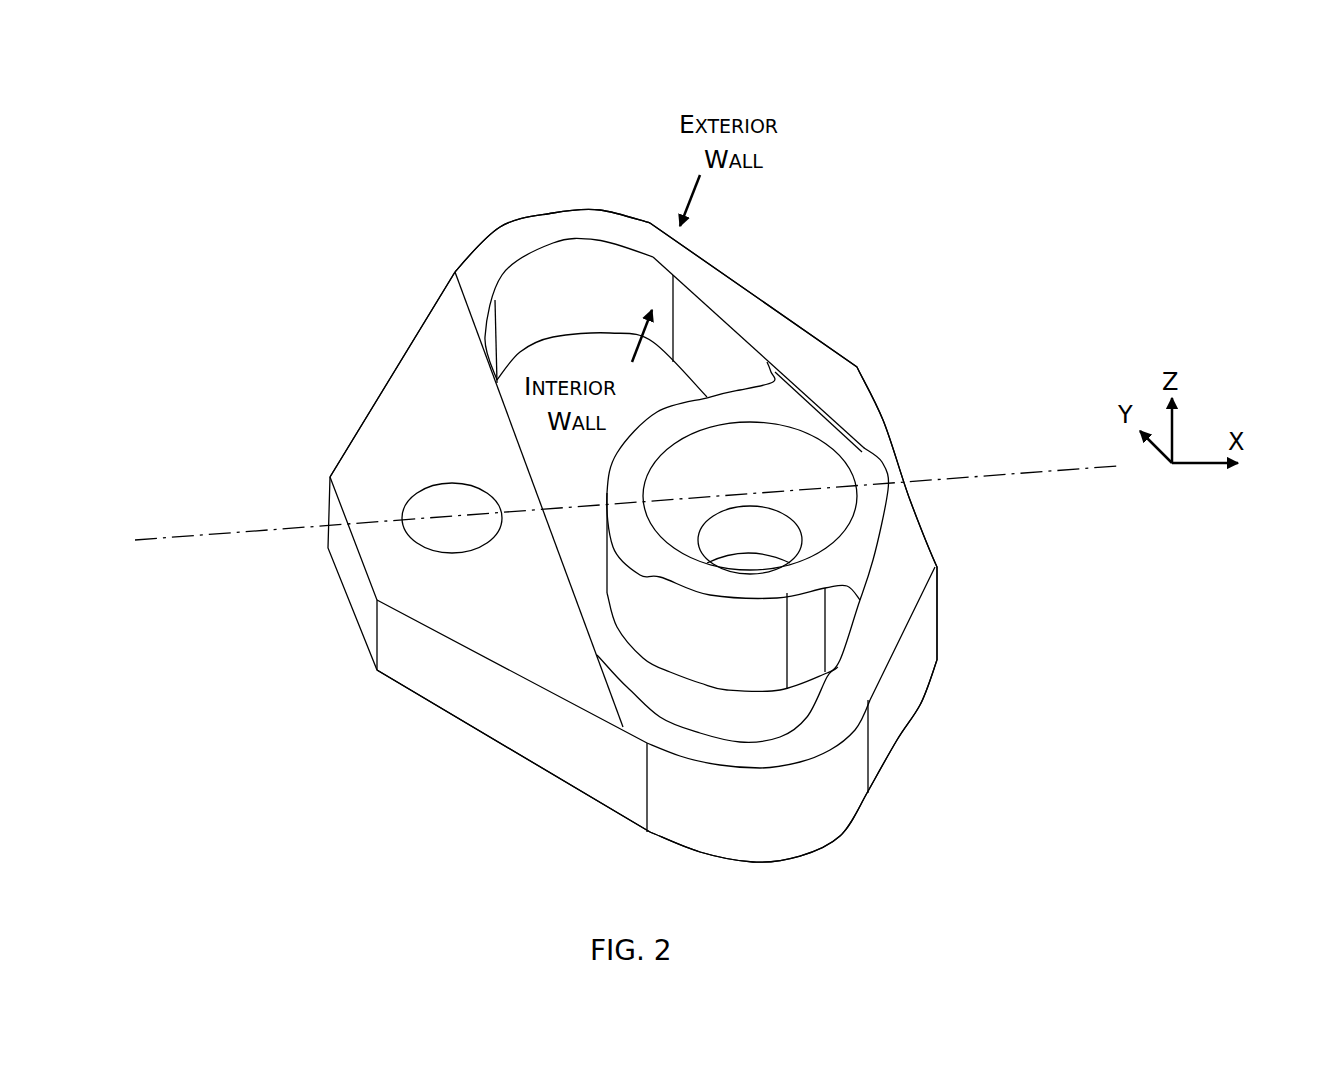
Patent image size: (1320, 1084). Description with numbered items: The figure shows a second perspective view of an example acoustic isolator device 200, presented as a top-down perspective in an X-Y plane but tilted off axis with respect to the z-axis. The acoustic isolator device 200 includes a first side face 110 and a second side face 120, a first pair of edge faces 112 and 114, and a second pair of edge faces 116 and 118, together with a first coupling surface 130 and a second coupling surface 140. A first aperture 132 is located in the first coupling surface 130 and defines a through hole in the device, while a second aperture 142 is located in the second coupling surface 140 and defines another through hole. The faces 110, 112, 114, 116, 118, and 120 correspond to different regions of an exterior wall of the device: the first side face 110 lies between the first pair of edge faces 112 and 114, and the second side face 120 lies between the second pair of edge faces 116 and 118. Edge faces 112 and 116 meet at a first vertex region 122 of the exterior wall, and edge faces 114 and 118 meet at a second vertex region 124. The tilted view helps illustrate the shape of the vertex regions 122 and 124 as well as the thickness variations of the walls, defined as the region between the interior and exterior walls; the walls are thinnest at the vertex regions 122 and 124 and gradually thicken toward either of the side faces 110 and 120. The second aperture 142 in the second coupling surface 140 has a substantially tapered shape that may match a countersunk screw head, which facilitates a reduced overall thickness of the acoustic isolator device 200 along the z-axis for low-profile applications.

The acoustic isolator device 200 is at (1162, 92).
The first side face 110 is at (360, 575).
The edge face 112 is at (385, 360).
The edge face 114 is at (455, 695).
The edge face 116 is at (777, 290).
The edge face 118 is at (895, 705).
The second side face 120 is at (940, 515).
The first vertex region 122 is at (557, 197).
The second vertex region 124 is at (755, 838).
The first coupling surface 130 is at (363, 483).
The first aperture 132 is at (437, 517).
The second coupling surface 140 is at (855, 443).
The second aperture 142 is at (769, 487).